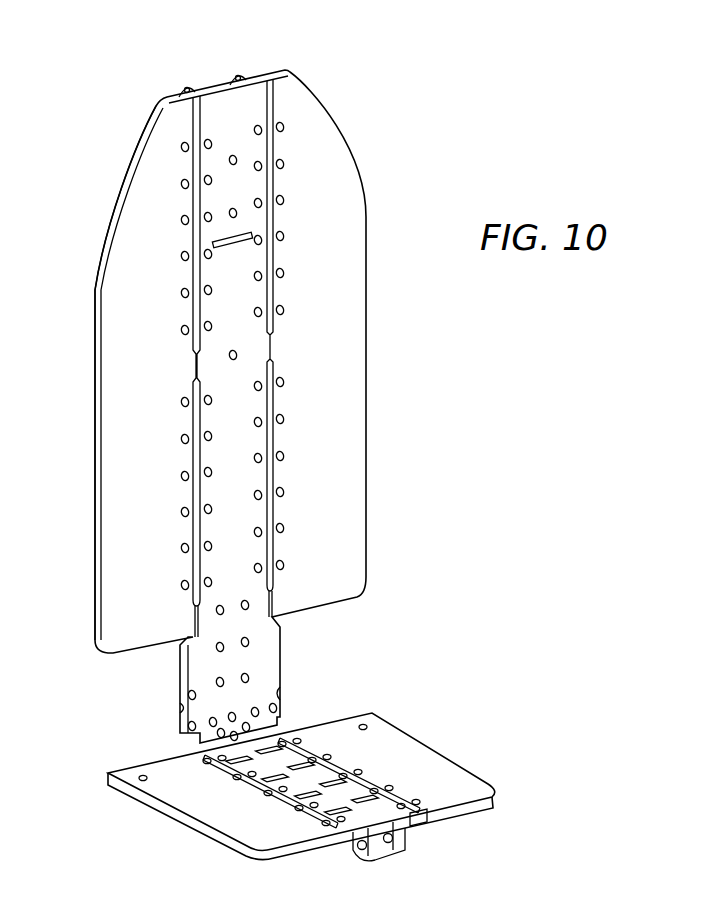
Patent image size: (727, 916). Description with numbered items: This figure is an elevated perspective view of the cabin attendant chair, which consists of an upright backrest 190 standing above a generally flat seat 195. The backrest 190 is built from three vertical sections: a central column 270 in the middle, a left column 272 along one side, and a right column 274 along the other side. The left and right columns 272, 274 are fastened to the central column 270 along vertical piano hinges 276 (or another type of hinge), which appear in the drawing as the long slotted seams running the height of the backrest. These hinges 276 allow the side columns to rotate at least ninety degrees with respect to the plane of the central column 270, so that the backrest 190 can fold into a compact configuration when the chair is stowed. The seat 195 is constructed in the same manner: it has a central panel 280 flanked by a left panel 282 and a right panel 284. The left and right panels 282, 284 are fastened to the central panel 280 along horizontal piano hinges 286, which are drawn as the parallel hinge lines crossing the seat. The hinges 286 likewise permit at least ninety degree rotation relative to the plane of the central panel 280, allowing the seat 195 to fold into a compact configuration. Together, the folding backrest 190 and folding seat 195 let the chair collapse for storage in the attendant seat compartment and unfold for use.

The backrest 190 is at (393, 220).
The seat 195 is at (465, 718).
The central column 270 is at (237, 108).
The left column 272 is at (137, 238).
The right column 274 is at (336, 287).
The vertical piano hinges 276 is at (195, 492).
The central panel 280 is at (373, 817).
The left panel 282 is at (272, 837).
The right panel 284 is at (462, 782).
The horizontal piano hinges 286 is at (223, 766).